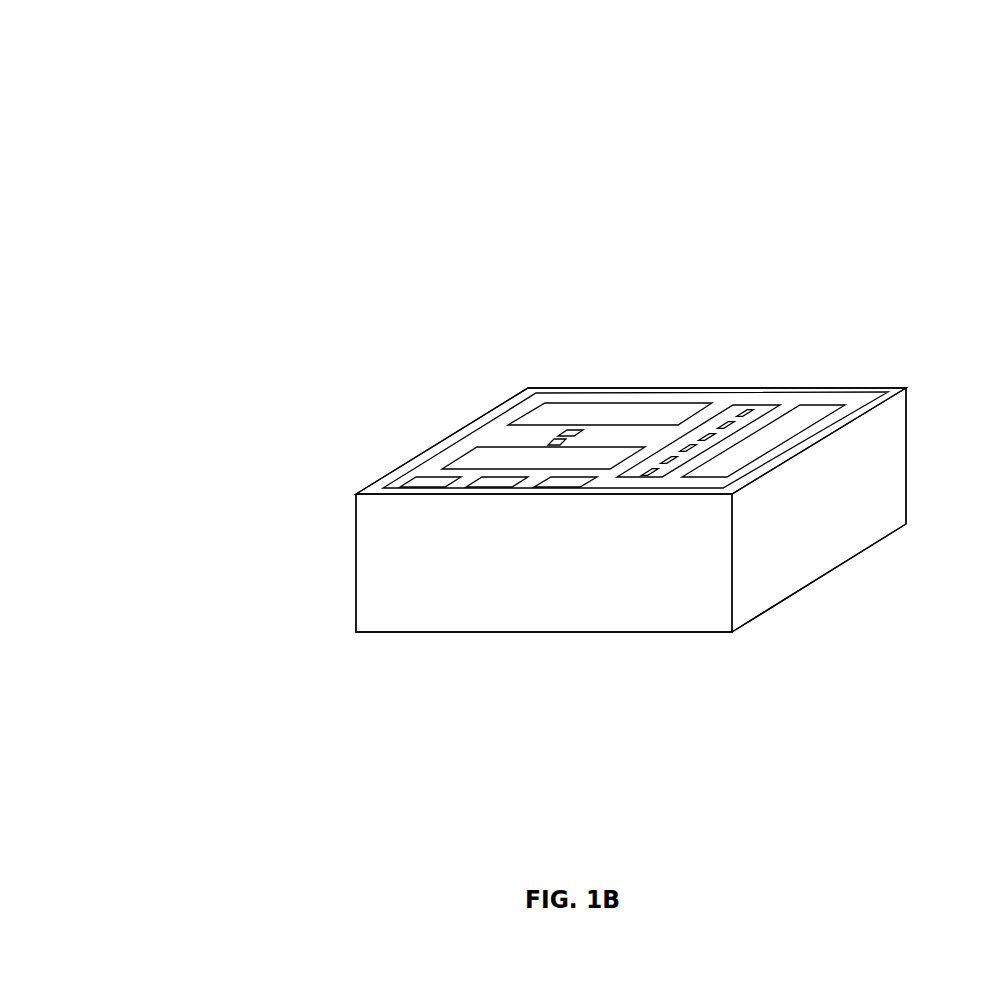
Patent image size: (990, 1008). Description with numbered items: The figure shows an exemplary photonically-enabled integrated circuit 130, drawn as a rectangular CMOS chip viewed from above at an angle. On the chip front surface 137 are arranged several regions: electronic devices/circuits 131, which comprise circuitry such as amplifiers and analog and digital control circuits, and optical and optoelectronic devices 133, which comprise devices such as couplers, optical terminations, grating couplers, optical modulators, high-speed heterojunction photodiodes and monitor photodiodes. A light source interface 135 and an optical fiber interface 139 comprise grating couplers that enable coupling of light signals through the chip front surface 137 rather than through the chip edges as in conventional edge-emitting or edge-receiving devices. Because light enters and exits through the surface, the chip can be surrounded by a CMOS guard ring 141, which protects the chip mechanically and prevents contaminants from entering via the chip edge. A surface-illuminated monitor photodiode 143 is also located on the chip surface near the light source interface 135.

The photonically-enabled integrated circuit 130 is at (204, 121).
The electronic devices/circuits 131 is at (563, 486).
The optical and optoelectronic devices 133 is at (608, 422).
The light source interface 135 is at (575, 428).
The chip front surface 137 is at (667, 398).
The optical fiber interface 139 is at (757, 405).
The CMOS guard ring 141 is at (891, 395).
The surface-illuminated monitor photodiode 143 is at (548, 441).